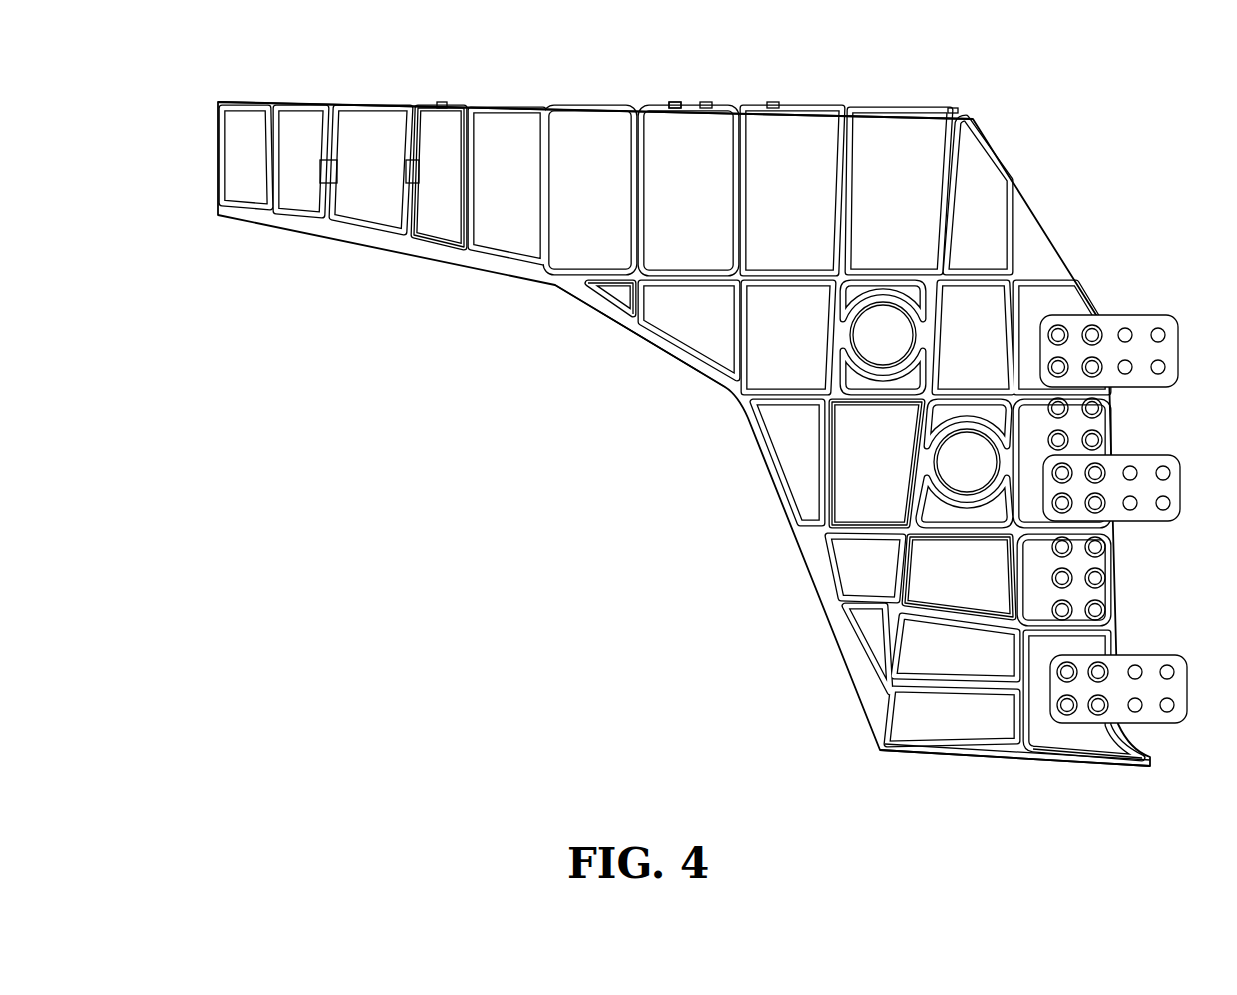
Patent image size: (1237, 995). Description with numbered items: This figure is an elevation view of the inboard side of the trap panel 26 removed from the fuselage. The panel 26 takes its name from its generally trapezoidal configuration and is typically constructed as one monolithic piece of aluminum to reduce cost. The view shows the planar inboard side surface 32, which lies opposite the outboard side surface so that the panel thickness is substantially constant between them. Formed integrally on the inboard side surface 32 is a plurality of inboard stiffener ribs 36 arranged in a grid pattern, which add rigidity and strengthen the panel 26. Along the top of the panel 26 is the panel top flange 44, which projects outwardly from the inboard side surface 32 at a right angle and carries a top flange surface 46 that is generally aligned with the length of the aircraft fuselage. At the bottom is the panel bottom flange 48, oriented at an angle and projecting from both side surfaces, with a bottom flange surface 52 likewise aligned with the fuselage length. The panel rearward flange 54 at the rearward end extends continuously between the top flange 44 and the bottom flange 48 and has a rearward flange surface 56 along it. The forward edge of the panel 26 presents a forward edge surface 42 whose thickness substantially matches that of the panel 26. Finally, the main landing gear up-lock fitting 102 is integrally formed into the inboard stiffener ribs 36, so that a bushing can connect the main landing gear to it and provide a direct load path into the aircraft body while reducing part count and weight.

The panel 26 is at (886, 758).
The inboard side surface 32 is at (858, 475).
The inboard stiffener ribs 36 is at (895, 578).
The forward edge surface 42 is at (1055, 245).
The panel top flange 44 is at (593, 92).
The top flange surface 46 is at (657, 102).
The panel bottom flange 48 is at (1008, 770).
The bottom flange surface 52 is at (1060, 762).
The panel rearward flange 54 is at (626, 337).
The rearward flange surface 56 is at (683, 365).
The up-lock fitting 102 is at (425, 140).